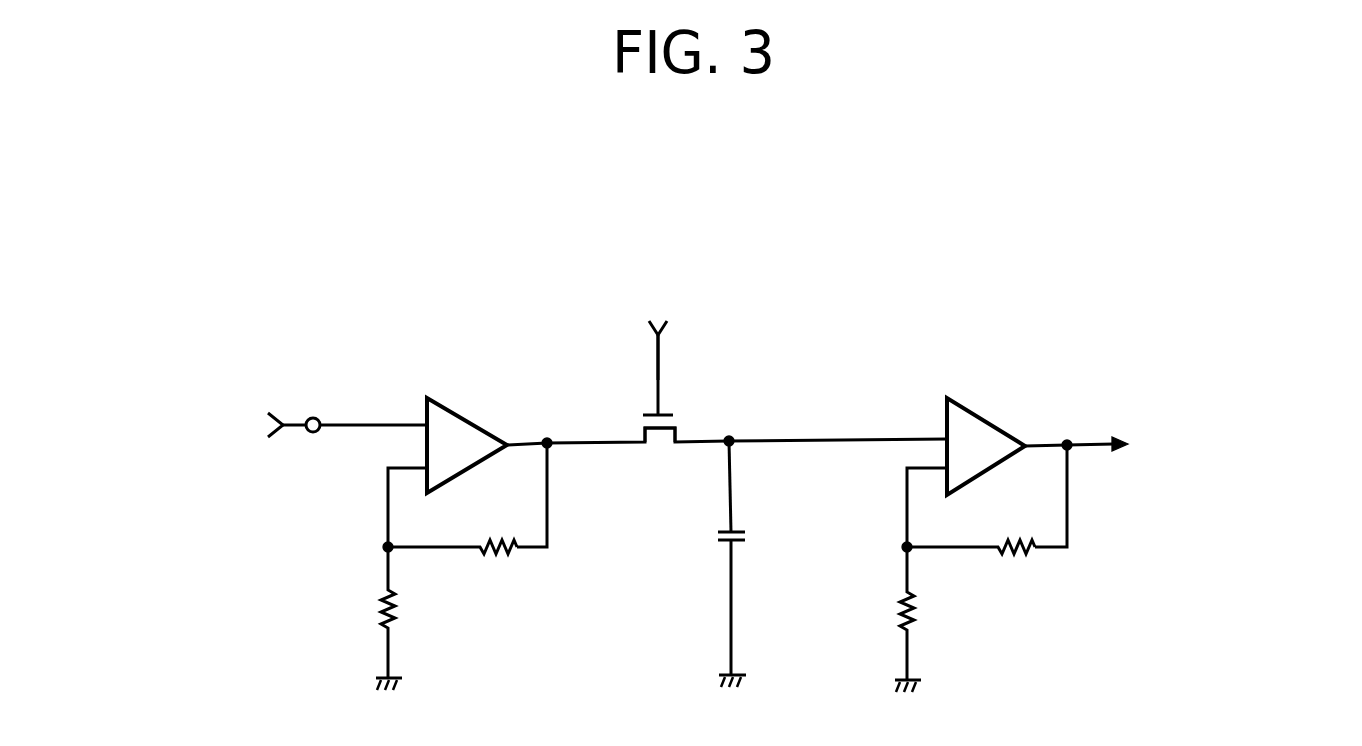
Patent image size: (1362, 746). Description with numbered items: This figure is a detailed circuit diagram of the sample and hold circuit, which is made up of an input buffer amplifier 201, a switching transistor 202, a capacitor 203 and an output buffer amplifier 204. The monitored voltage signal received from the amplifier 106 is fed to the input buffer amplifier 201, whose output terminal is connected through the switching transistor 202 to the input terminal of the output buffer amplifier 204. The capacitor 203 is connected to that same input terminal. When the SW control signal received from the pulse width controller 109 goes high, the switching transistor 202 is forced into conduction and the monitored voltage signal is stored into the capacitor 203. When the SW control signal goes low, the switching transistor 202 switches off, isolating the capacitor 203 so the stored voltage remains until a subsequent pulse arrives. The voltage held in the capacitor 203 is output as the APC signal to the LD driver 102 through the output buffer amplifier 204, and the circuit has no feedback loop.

The input buffer amplifier 201 is at (452, 397).
The switching transistor 202 is at (676, 420).
The capacitor 203 is at (718, 541).
The output buffer amplifier 204 is at (993, 412).
The amplifier 106 is at (241, 441).
The pulse width controller 109 is at (844, 322).
The LD driver 102 is at (1209, 446).